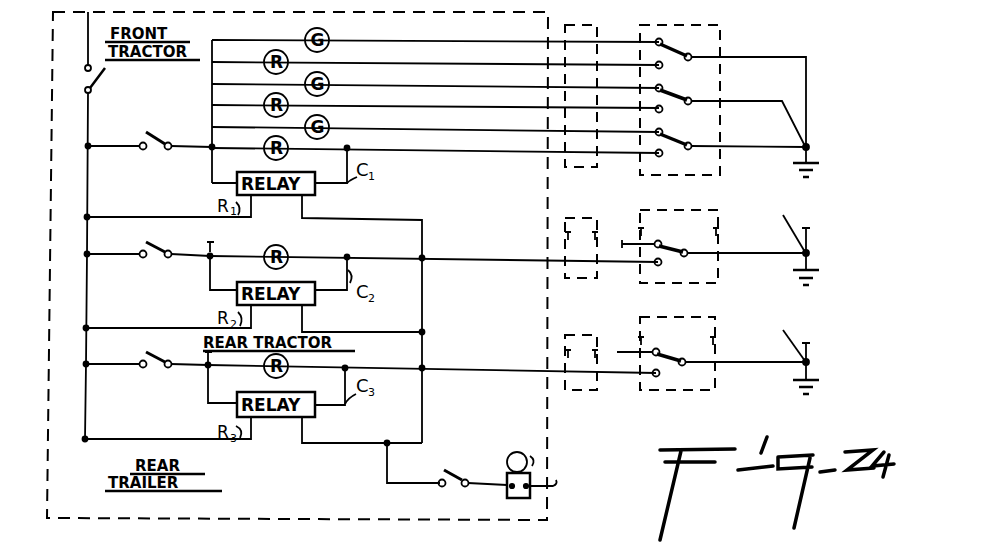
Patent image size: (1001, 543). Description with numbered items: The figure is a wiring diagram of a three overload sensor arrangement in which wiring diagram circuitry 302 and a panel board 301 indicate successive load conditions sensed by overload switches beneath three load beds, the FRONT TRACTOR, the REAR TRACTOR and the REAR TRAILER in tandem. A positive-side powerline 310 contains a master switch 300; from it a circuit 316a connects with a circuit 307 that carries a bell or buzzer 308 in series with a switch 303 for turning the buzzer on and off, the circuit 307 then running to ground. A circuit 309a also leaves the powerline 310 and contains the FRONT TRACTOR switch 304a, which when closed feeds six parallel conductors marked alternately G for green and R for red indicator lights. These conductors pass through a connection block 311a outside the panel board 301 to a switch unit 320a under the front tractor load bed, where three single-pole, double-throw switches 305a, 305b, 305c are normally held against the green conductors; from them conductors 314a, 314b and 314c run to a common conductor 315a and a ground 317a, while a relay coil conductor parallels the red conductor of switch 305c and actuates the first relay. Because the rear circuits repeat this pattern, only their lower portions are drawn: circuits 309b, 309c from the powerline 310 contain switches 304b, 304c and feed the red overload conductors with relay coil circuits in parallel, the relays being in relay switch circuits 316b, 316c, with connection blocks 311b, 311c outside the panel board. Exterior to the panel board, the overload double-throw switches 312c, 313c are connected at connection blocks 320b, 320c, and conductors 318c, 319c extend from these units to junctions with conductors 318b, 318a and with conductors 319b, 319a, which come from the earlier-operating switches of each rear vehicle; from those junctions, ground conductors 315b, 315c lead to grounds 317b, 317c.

The master switch 300 is at (76, 77).
The panel board 301 is at (94, 521).
The wiring diagram circuitry 302 is at (637, 25).
The switch 303 is at (468, 479).
The FRONT TRACTOR switch 304a is at (160, 150).
The REAR TRACTOR switch 304b is at (160, 258).
The REAR TRAILER switch 304c is at (160, 367).
The single-pole, double-throw switch 305a is at (692, 48).
The single-pole, double-throw switch 305b is at (692, 95).
The single-pole, double-throw switch 305c is at (692, 140).
The circuit 307 is at (384, 468).
The bell or buzzer 308 is at (516, 450).
The circuit 309a is at (108, 144).
The circuit 309b is at (108, 255).
The circuit 309c is at (112, 366).
The positive-side powerline 310 is at (86, 418).
The connection block 311a is at (590, 167).
The connection block 311b is at (584, 278).
The connection block 311c is at (596, 390).
The switch contact 312c is at (674, 246).
The switch contact 313c is at (672, 354).
The conductor 314a is at (806, 99).
The conductor 314b is at (809, 108).
The conductor 314c is at (783, 149).
The common conductor 315a is at (812, 143).
The ground conductor 315b is at (810, 259).
The ground conductor 315c is at (810, 368).
The circuit 316a is at (357, 217).
The relay switch circuit 316b is at (338, 330).
The relay switch circuit 316c is at (357, 446).
The ground 317a is at (817, 187).
The ground 317b is at (818, 295).
The ground 317c is at (816, 405).
The conductor 318a is at (810, 240).
The conductor 318b is at (787, 221).
The conductor 318c is at (784, 255).
The conductor 319a is at (810, 350).
The conductor 319b is at (787, 331).
The conductor 319c is at (784, 364).
The switch unit 320a is at (700, 180).
The connection block 320b is at (705, 283).
The connection block 320c is at (700, 391).